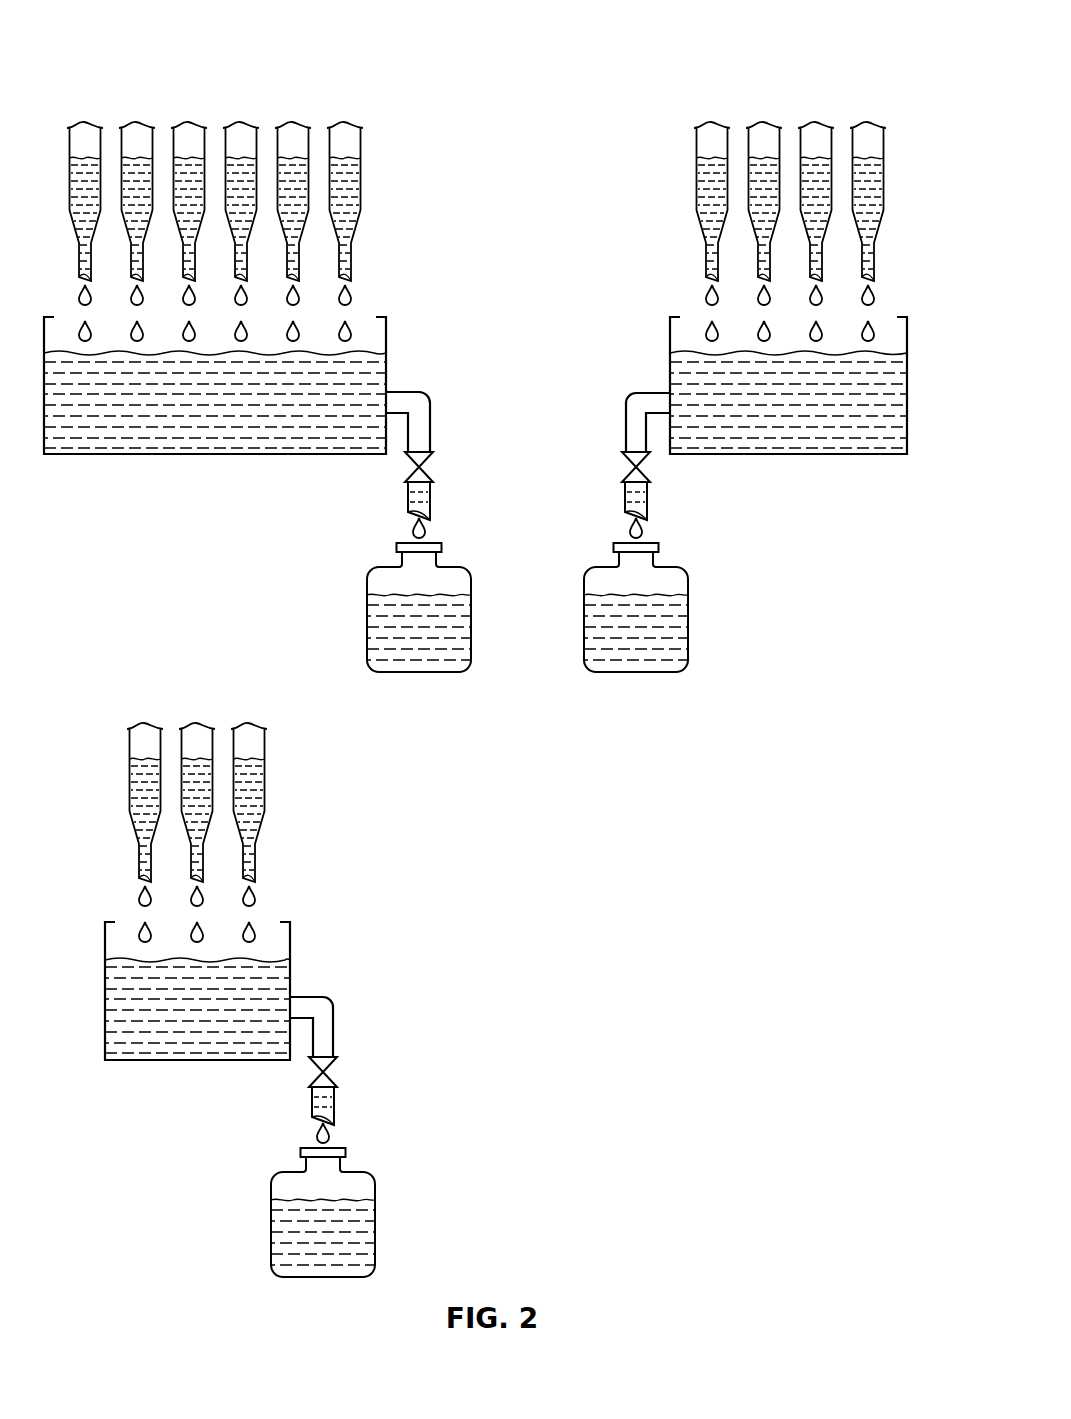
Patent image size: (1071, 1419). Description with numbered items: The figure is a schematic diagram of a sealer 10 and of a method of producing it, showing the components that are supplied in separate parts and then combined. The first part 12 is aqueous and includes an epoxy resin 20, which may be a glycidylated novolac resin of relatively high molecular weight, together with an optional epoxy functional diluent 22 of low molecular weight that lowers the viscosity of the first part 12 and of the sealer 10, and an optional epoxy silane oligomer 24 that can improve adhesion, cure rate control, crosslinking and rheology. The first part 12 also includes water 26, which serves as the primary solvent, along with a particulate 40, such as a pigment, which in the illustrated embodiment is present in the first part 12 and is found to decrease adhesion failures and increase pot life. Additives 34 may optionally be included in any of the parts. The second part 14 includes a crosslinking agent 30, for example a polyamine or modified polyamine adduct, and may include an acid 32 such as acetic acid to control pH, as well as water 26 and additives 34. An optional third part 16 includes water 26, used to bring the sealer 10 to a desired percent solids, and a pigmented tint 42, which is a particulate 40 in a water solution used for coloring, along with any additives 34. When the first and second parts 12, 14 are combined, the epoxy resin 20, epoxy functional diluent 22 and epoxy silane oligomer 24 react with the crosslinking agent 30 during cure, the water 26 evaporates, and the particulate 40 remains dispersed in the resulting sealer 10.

The sealer 10 is at (886, 38).
The first part 12 is at (388, 621).
The second part 14 is at (668, 622).
The third part 16 is at (293, 1228).
The epoxy resin 20 is at (85, 167).
The epoxy functional diluent 22 is at (137, 167).
The epoxy silane oligomer 24 is at (189, 167).
The water 26 is at (241, 167).
The crosslinking agent 30 is at (712, 167).
The acid 32 is at (764, 167).
The additives 34 is at (345, 167).
The particulate 40 is at (293, 167).
The pigmented tint 42 is at (197, 768).